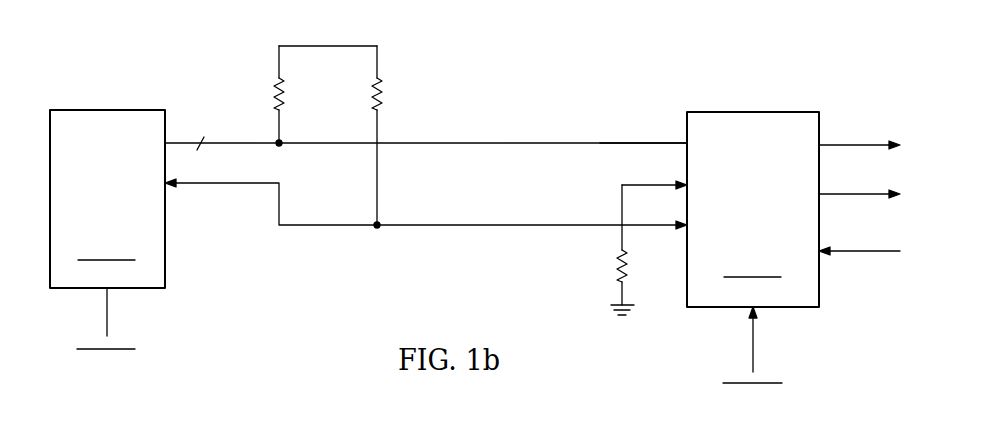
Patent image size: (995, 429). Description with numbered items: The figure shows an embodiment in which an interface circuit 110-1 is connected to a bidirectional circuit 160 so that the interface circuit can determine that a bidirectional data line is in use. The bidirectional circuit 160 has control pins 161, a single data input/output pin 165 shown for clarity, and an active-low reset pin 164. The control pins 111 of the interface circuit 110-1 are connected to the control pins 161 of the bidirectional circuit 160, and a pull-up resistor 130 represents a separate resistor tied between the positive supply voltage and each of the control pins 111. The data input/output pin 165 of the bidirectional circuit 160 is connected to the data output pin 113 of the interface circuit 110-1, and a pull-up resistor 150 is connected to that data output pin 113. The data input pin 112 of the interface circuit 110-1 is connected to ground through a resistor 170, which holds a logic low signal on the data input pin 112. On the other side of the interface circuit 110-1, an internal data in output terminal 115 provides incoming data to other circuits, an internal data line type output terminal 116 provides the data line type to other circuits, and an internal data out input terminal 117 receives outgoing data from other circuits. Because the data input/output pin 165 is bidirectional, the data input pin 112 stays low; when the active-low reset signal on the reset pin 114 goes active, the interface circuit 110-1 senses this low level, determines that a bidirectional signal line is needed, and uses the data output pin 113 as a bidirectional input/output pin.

The bidirectional circuit 160 is at (120, 109).
The reset pin 164 is at (108, 305).
The control pins 161 is at (239, 140).
The data input/output pin 165 is at (240, 181).
The pull-up resistor 130 is at (273, 89).
The pull-up resistor 150 is at (382, 89).
The control pins 111 is at (647, 141).
The data input pin 112 is at (646, 182).
The data output pin 113 is at (646, 222).
The resistor 170 is at (630, 263).
The interface circuit 110-1 is at (763, 111).
The reset pin 114 is at (755, 335).
The internal data in output terminal 115 is at (852, 143).
The internal data line type output terminal 116 is at (852, 192).
The internal data out input terminal 117 is at (852, 249).